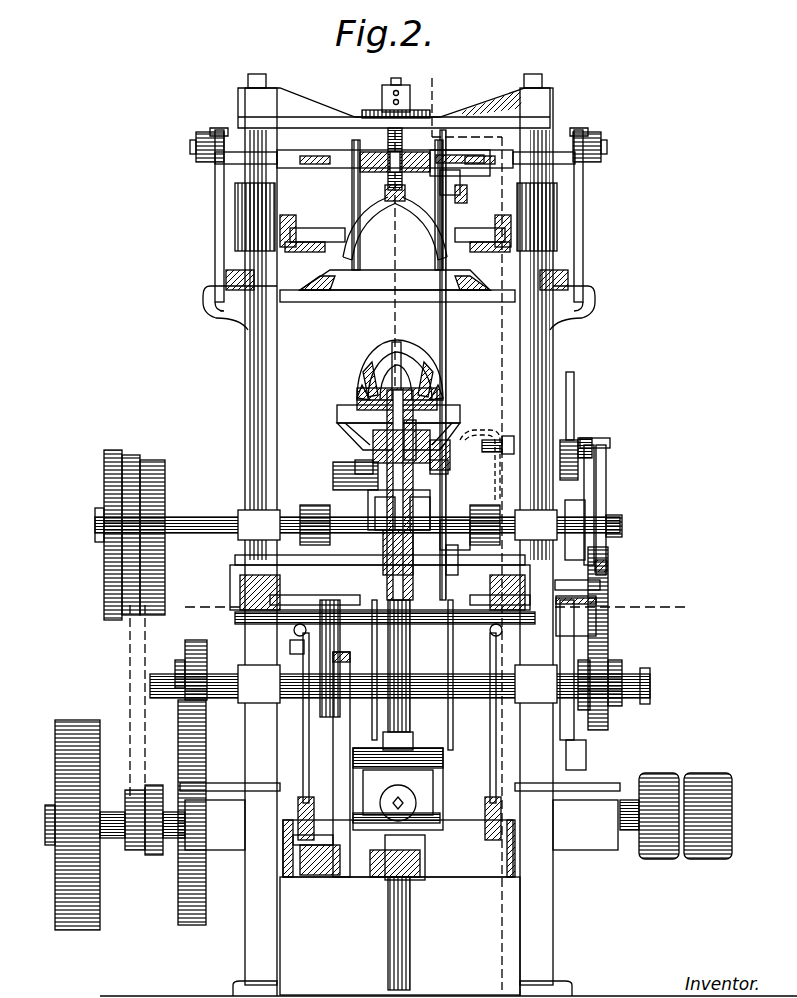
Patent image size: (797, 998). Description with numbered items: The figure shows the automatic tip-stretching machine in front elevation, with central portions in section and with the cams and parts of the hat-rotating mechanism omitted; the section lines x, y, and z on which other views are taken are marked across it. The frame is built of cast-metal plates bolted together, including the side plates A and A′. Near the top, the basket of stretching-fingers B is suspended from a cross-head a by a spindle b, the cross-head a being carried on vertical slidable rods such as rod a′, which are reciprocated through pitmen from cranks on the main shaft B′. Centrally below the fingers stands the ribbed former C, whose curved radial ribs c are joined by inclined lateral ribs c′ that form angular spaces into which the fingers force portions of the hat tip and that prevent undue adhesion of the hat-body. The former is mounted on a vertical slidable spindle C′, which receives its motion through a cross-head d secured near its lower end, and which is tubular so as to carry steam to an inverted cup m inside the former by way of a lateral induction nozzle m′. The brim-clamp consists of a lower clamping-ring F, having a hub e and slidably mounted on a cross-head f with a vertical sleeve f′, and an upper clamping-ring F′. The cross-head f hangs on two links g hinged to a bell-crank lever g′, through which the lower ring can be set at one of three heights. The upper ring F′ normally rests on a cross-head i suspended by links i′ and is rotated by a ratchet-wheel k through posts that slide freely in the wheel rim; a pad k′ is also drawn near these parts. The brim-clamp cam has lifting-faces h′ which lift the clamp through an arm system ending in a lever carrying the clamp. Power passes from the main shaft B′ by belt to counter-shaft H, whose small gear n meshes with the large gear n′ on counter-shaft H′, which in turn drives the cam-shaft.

The side plate A is at (255, 542).
The side plate A′ is at (546, 542).
The cross-head a is at (394, 108).
The vertical slidable rod a′ is at (235, 358).
The stretching-fingers B is at (375, 224).
The main shaft B′ is at (97, 690).
The spindle b is at (390, 150).
The ribbed former C is at (400, 359).
The spindle C′ is at (408, 925).
The curved radial rib c is at (402, 372).
The inclined lateral rib c′ is at (360, 385).
The cross-head d is at (415, 740).
The hub e is at (365, 447).
The lower clamping-ring F is at (340, 412).
The upper clamping-ring F′ is at (357, 292).
The cross-head f is at (430, 498).
The vertical sleeve f′ is at (335, 476).
The link g is at (385, 712).
The bell-crank lever g′ is at (418, 790).
The counter-shaft H is at (357, 521).
The counter-shaft H′ is at (250, 674).
The lifting-face h′ is at (334, 764).
The cross-head i is at (312, 292).
The link i′ is at (215, 258).
The ratchet-wheel k is at (300, 225).
The pad k′ is at (310, 240).
The inverted cup m is at (400, 358).
The induction nozzle m′ is at (390, 540).
The small gear n is at (620, 515).
The large gear n′ is at (608, 632).
The section line x is at (429, 65).
The section line y is at (396, 86).
The section line z is at (434, 609).